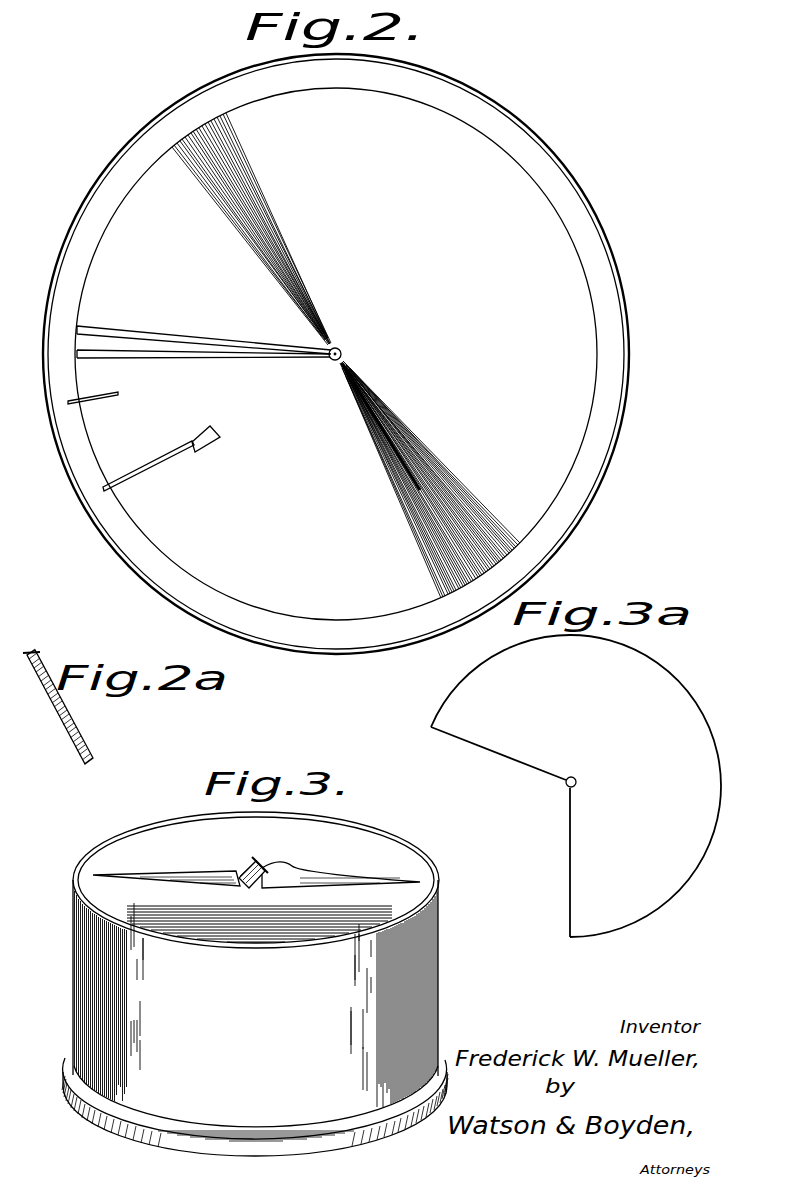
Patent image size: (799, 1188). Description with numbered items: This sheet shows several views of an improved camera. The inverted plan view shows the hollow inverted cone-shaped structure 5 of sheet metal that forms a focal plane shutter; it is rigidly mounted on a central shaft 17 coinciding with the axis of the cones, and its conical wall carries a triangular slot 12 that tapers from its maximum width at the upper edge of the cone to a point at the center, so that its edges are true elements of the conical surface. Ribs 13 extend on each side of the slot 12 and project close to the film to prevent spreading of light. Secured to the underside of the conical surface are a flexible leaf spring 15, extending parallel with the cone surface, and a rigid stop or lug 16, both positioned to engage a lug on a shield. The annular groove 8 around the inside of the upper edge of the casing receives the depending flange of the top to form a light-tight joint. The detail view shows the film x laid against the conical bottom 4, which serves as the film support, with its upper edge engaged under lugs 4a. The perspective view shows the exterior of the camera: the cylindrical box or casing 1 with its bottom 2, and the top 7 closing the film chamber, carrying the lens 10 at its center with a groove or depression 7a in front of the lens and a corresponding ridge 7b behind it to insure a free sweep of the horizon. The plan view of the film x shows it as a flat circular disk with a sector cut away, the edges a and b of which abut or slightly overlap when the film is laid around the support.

In FIG. 3, the box or casing 1 is at (222, 1002).
In FIG. 3, the bottom 2 is at (62, 1077).
In FIG. 2A, the conical bottom 4 is at (55, 717).
In FIG. 2A, the lugs 4a is at (36, 652).
In FIG. 2, the hollow inverted cone-shaped structure 5 is at (336, 354).
In FIG. 3, the top 7 is at (256, 841).
In FIG. 3, the groove or depression 7a is at (191, 878).
In FIG. 3, the ridge 7b is at (305, 873).
In FIG. 2, the annular groove 8 is at (132, 141).
In FIG. 3, the lens 10 is at (247, 865).
In FIG. 2, the slot 12 is at (151, 343).
In FIG. 2, the ribs 13 is at (202, 345).
In FIG. 2, the flexible leaf spring 15 is at (140, 473).
In FIG. 2, the rigid stop or lug 16 is at (95, 401).
In FIG. 2, the central shaft 17 is at (343, 351).
In FIG. 3A, the edge of the film a is at (499, 754).
In FIG. 3A, the edge of the film b is at (570, 857).
In FIG. 2A, the film x is at (78, 727).
In FIG. 3A, the film x is at (650, 888).